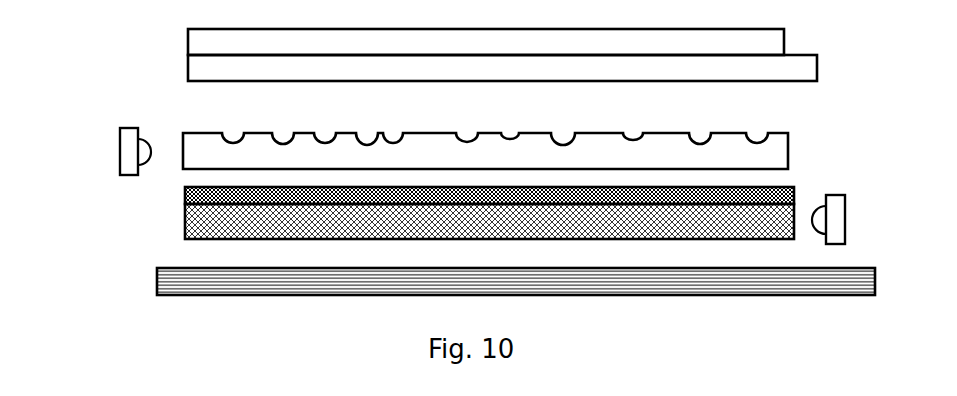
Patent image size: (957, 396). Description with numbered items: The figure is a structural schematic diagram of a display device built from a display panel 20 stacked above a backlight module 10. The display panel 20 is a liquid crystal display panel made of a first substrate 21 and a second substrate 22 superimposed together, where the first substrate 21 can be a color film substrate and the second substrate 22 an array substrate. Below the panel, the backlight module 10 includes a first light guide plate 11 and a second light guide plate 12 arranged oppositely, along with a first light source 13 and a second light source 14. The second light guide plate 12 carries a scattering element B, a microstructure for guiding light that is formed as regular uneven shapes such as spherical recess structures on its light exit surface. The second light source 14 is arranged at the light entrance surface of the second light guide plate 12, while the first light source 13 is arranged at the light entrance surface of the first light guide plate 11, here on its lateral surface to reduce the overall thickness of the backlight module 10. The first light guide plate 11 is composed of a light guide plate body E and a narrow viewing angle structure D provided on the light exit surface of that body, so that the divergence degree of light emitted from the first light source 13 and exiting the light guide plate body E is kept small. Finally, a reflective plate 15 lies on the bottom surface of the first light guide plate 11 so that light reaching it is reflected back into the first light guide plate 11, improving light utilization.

The backlight module 10 is at (74, 148).
The first light guide plate 11 is at (147, 190).
The second light guide plate 12 is at (452, 167).
The first light source 13 is at (837, 220).
The second light source 14 is at (134, 146).
The reflective plate 15 is at (232, 285).
The display panel 20 is at (70, 38).
The first substrate 21 is at (214, 44).
The second substrate 22 is at (214, 68).
The scattering element B is at (713, 143).
The narrow viewing angle structure D is at (185, 197).
The light guide plate body E is at (212, 223).